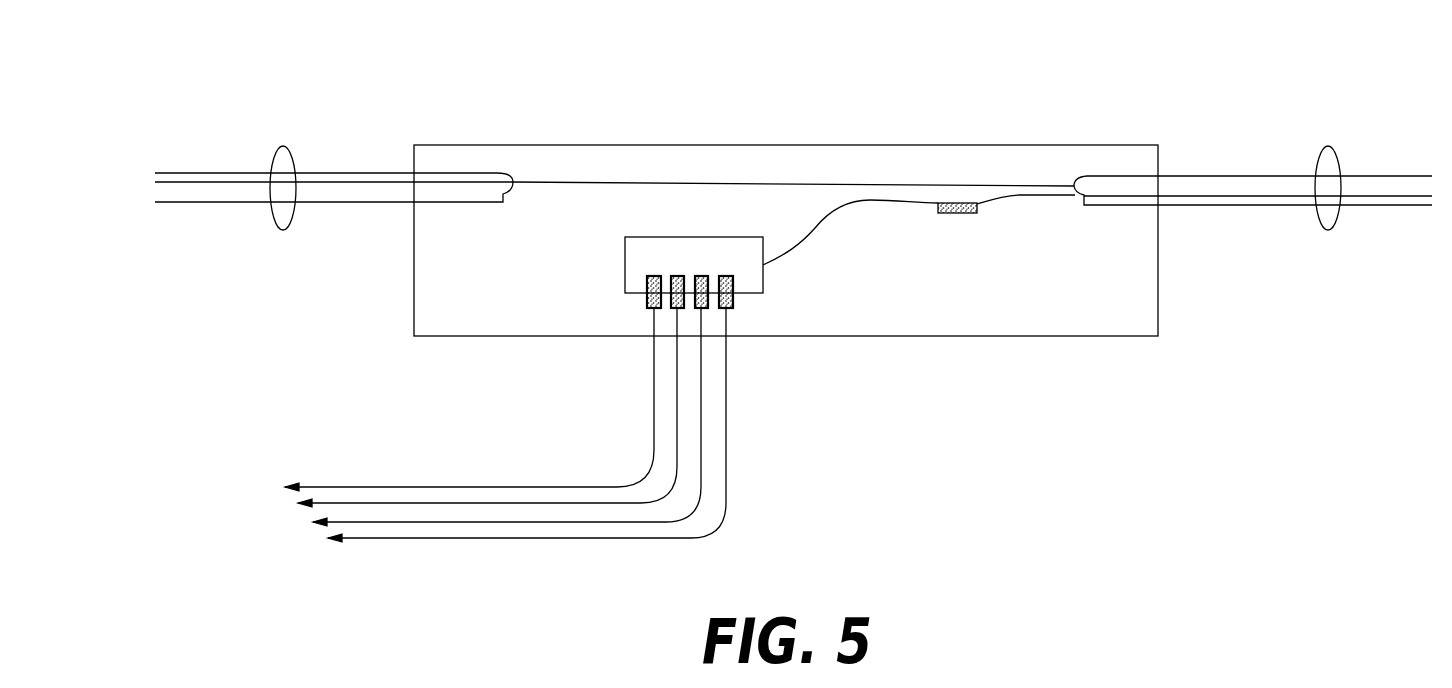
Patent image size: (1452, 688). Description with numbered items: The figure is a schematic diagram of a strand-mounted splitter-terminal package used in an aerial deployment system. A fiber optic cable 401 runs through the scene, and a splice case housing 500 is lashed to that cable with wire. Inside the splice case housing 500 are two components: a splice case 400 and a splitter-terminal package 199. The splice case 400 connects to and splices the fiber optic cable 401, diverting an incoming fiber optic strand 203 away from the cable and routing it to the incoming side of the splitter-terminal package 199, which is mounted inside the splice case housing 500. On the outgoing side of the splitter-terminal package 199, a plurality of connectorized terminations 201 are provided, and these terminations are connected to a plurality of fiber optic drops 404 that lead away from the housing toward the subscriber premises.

The fiber optic cable 401 is at (283, 147).
The splice case housing 500 is at (928, 336).
The splitter-terminal package 199 is at (748, 294).
The connectorized terminations 201 is at (645, 298).
The incoming fiber optic strand 203 is at (808, 238).
The splice case 400 is at (960, 213).
The fiber optic drops 404 is at (275, 482).